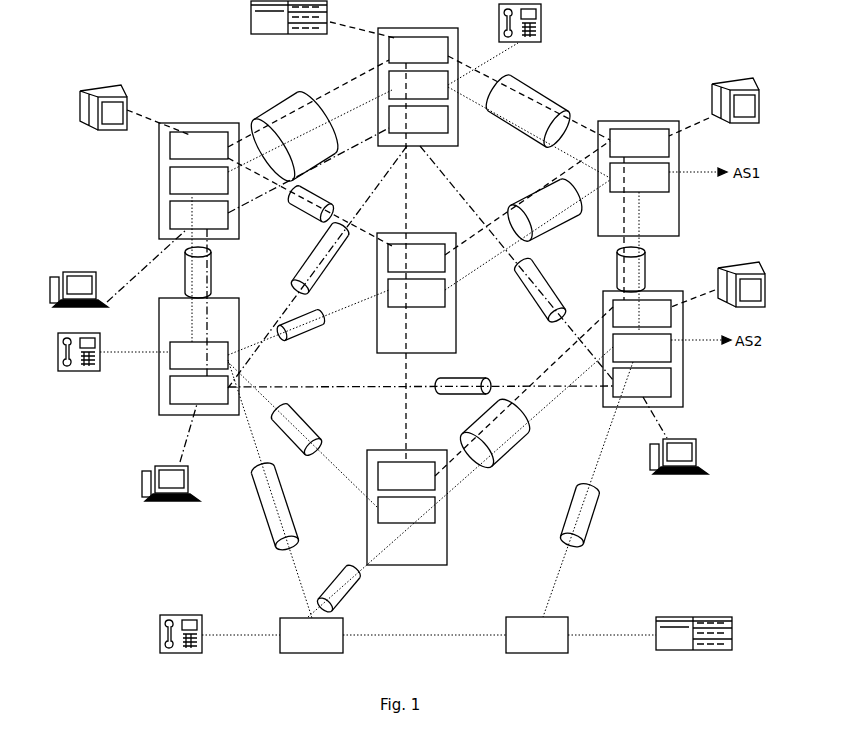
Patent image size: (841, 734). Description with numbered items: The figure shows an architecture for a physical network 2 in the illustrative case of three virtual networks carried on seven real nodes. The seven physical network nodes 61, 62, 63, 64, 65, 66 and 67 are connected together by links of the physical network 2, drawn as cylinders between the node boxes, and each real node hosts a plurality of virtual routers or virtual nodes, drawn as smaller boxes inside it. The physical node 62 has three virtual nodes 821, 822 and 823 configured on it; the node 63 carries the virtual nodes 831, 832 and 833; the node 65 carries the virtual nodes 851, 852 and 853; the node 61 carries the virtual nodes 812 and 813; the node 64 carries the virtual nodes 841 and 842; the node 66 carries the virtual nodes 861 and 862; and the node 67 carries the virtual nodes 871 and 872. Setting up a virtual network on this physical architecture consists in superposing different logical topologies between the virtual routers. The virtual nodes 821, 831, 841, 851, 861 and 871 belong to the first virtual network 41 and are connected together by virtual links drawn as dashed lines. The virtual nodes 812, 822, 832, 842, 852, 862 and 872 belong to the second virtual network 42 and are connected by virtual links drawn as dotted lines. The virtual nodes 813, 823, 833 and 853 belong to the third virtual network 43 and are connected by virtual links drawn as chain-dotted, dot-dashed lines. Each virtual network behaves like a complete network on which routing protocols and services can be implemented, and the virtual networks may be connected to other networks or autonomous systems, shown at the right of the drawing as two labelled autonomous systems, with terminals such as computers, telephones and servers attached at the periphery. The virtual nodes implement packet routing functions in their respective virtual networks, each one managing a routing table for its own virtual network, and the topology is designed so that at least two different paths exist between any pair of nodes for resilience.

The physical network 2 is at (255, 103).
The virtual network 41 is at (582, 126).
The virtual network 42 is at (333, 459).
The virtual network 43 is at (469, 193).
The physical network node 61 is at (178, 370).
The physical network node 62 is at (178, 195).
The physical network node 63 is at (397, 100).
The physical network node 64 is at (659, 189).
The physical network node 65 is at (662, 360).
The physical network node 66 is at (386, 523).
The physical network node 67 is at (395, 306).
The virtual node 812 is at (170, 348).
The virtual node 813 is at (170, 382).
The virtual node 821 is at (170, 141).
The virtual node 822 is at (170, 176).
The virtual node 823 is at (170, 210).
The virtual node 831 is at (389, 40).
The virtual node 832 is at (389, 76).
The virtual node 833 is at (389, 112).
The virtual node 841 is at (669, 140).
The virtual node 842 is at (669, 175).
The virtual node 851 is at (671, 310).
The virtual node 852 is at (671, 345).
The virtual node 853 is at (671, 380).
The virtual node 861 is at (378, 470).
The virtual node 862 is at (378, 505).
The virtual node 871 is at (388, 251).
The virtual node 872 is at (388, 285).